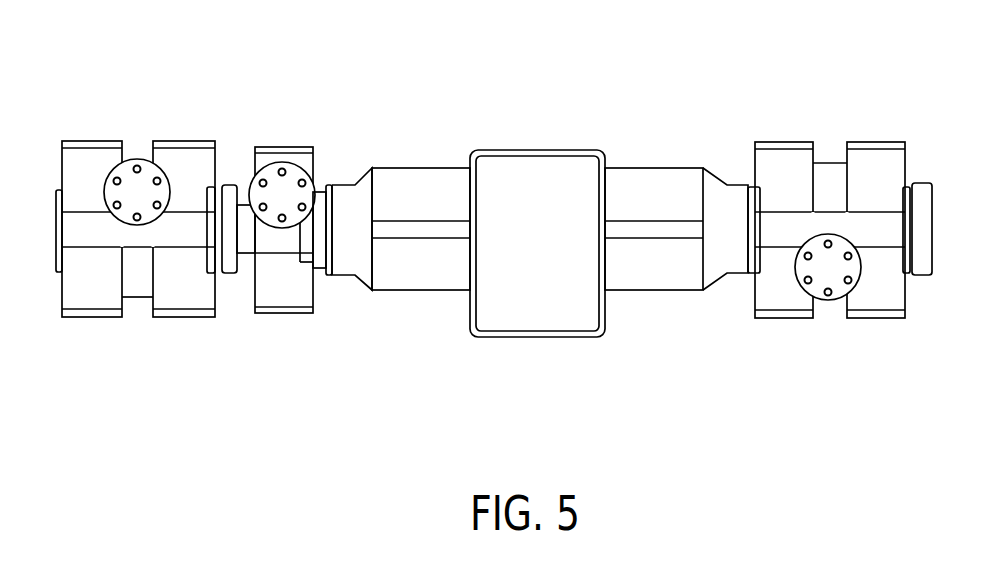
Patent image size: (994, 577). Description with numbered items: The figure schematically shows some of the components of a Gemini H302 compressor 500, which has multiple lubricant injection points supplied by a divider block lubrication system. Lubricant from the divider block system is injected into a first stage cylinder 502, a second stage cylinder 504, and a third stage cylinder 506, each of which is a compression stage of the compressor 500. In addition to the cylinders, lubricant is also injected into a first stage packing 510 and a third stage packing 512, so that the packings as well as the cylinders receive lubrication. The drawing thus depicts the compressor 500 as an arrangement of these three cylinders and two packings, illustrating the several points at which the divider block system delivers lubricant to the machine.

The compressor 500 is at (835, 60).
The first stage cylinder 502 is at (845, 360).
The second stage cylinder 504 is at (137, 355).
The third stage cylinder 506 is at (277, 362).
The first stage packing 510 is at (625, 115).
The third stage packing 512 is at (403, 112).